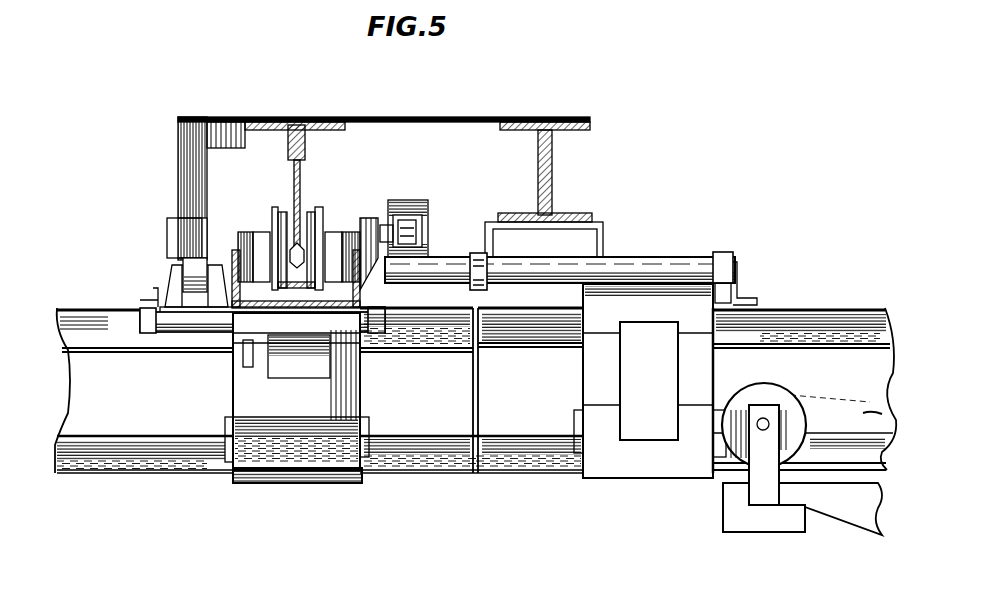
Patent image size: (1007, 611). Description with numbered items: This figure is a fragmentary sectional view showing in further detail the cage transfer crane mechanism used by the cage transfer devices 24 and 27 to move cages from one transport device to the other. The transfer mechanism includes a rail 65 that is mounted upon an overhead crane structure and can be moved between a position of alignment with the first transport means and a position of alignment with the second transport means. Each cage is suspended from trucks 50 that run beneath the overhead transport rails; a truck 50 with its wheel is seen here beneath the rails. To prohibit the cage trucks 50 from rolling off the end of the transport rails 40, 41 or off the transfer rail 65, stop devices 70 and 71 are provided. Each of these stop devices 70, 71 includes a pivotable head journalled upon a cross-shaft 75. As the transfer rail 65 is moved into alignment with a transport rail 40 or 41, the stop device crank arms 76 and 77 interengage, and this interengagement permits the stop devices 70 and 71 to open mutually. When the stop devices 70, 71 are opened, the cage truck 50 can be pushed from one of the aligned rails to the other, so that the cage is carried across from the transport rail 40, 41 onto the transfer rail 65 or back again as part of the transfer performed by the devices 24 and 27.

The first cage transfer device 24 is at (368, 173).
The second cage transfer means 27 is at (191, 99).
The stop device crank arm 77 is at (368, 222).
The stop device crank arm 76 is at (418, 210).
The cross-shaft 75 is at (443, 263).
The rail 65 is at (139, 393).
The stop device 70 is at (315, 432).
The stop device 71 is at (603, 455).
The transport rail 40 is at (836, 390).
The transport rail 41 is at (894, 434).
The truck 50 is at (823, 495).